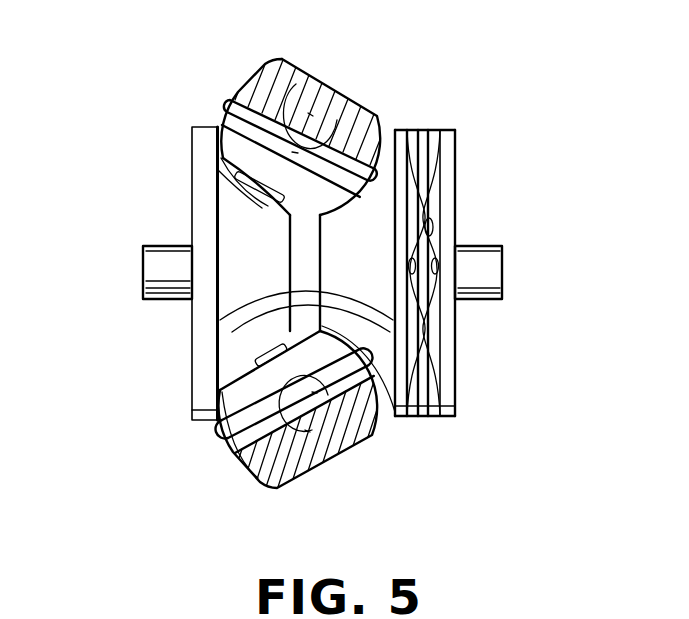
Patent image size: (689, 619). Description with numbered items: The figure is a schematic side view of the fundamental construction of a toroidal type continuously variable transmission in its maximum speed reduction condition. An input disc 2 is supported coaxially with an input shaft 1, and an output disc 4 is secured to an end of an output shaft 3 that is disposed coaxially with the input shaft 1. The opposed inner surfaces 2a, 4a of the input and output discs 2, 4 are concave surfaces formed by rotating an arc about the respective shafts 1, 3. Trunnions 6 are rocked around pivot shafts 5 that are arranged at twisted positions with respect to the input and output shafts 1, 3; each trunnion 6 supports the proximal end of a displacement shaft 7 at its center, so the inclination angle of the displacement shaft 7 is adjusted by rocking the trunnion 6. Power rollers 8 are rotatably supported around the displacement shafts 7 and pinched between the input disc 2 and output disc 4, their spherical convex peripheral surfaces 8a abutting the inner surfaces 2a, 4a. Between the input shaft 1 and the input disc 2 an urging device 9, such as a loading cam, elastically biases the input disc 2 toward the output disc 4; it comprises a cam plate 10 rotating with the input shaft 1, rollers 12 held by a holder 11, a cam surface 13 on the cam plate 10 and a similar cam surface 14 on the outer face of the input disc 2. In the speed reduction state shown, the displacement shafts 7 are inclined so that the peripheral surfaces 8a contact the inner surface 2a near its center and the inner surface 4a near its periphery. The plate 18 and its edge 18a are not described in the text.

The input shaft 1 is at (503, 270).
The input disc 2 is at (445, 130).
The inner surface of the input disc 2a is at (356, 420).
The output shaft 3 is at (147, 268).
The output disc 4 is at (197, 190).
The inner surface of the output disc 4a is at (262, 203).
The pivot shaft 5 is at (296, 84).
The trunnion 6 is at (258, 68).
The displacement shaft 7 is at (232, 172).
The power roller 8 is at (232, 140).
The peripheral surface of the power roller 8a is at (226, 126).
The urging device 9 is at (453, 118).
The cam plate 10 is at (457, 185).
The holder 11 is at (423, 132).
The roller 12 is at (412, 130).
The cam surface 13 is at (432, 218).
The cam surface 14 is at (430, 330).
The flange 18 is at (196, 421).
The flange edge 18a is at (447, 389).